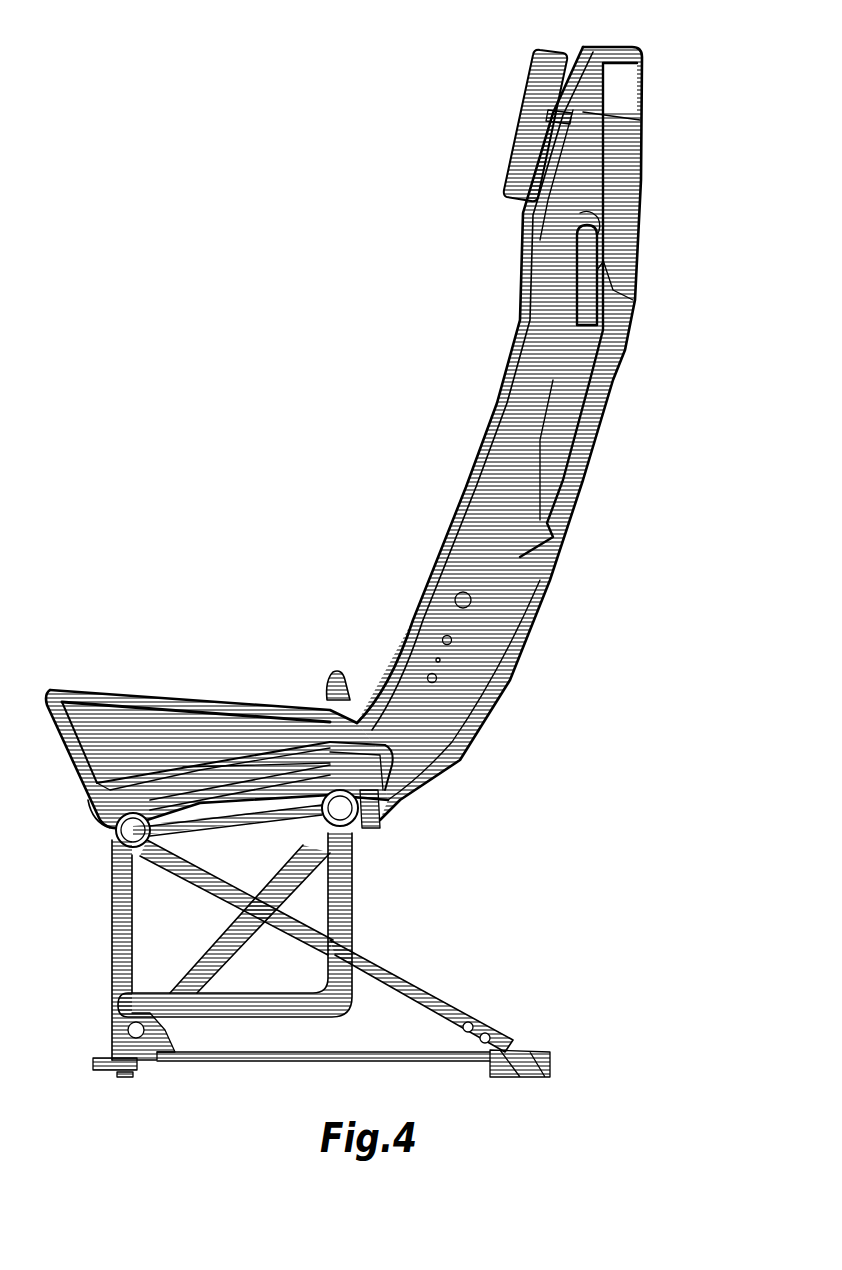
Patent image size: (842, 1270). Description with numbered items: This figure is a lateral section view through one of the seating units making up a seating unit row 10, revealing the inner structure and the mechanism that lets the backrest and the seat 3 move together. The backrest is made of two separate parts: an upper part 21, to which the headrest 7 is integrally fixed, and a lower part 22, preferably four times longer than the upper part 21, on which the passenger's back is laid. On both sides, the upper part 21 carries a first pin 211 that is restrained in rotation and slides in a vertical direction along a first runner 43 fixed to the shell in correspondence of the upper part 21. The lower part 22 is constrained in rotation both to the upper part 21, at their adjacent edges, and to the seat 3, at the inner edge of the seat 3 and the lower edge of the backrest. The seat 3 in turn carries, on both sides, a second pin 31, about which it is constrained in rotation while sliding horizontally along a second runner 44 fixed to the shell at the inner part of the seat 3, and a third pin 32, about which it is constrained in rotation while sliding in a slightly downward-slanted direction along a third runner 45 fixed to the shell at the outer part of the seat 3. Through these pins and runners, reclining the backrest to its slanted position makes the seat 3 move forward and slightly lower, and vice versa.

The seating unit row 10 is at (321, 318).
The headrest 7 is at (520, 118).
The upper part of backrest 21 is at (540, 223).
The first pin 211 is at (580, 213).
The first runner 43 is at (603, 262).
The lower part of backrest 22 is at (503, 387).
The seat 3 is at (200, 700).
The third runner 45 is at (90, 817).
The third pin 32 is at (193, 803).
The second pin 31 is at (397, 763).
The second runner 44 is at (387, 785).